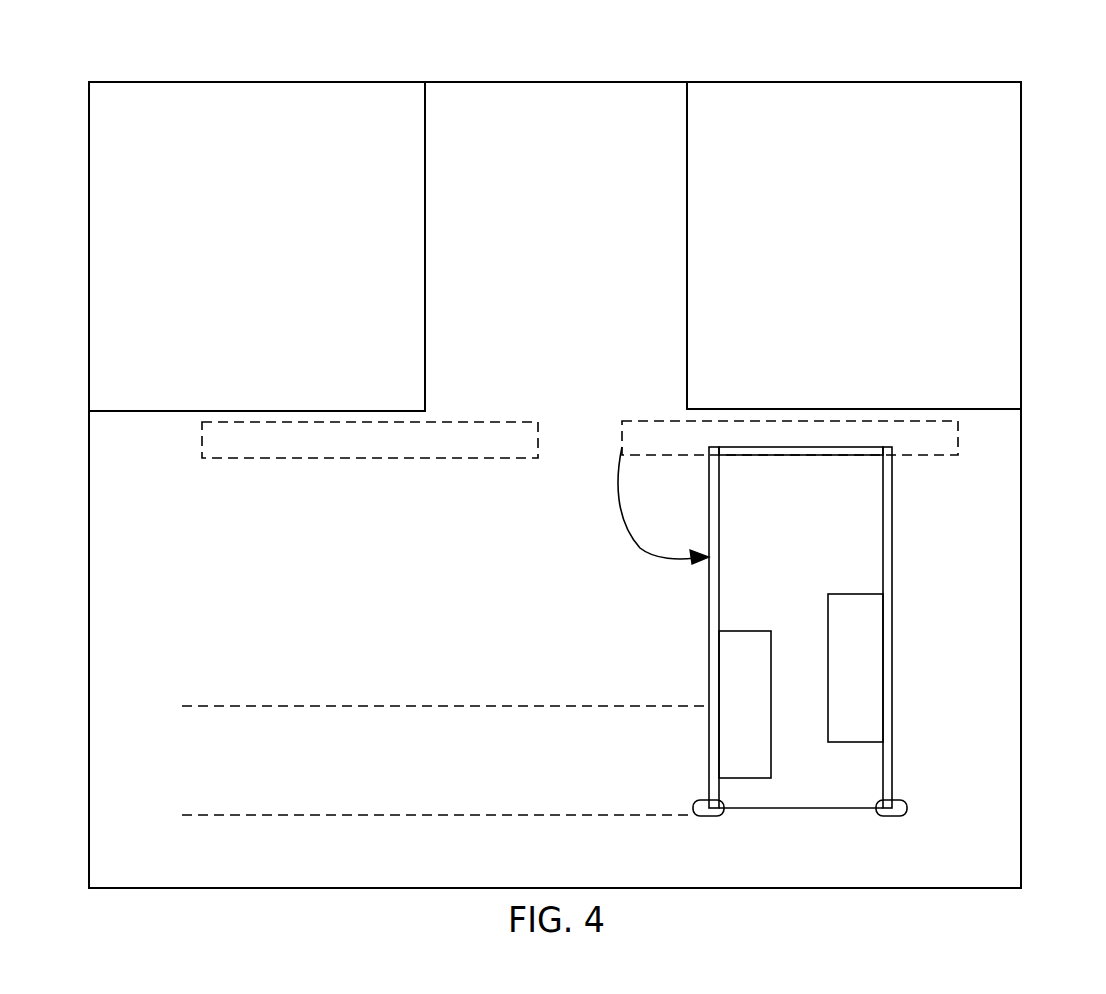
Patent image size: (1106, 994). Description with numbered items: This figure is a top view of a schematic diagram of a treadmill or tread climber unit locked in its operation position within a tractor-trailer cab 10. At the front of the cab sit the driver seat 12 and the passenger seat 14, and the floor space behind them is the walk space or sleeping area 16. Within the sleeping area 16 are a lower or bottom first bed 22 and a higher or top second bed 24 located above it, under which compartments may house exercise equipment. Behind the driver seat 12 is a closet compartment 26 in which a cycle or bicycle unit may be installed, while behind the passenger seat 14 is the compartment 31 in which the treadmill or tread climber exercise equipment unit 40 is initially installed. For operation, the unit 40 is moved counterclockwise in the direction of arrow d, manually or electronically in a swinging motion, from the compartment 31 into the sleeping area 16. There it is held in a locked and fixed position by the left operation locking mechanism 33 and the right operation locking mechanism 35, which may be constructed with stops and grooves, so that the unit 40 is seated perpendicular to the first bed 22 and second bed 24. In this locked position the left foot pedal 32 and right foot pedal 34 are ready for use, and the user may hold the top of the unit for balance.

The device / assembly 10 is at (1012, 58).
The driver seat 12 is at (243, 249).
The passenger seat 14 is at (839, 266).
The sleeping area 16 is at (299, 559).
The first bed 22 is at (219, 706).
The second bed 24 is at (219, 815).
The closet compartment 26 is at (354, 450).
The compartment 31 is at (636, 449).
The left foot pedal 32 is at (729, 717).
The left operation locking mechanism 33 is at (709, 817).
The right foot pedal 34 is at (839, 691).
The right operation locking mechanism 35 is at (893, 817).
The treadmill or tread climber exercise equipment unit 40 is at (914, 489).
The arrow d is at (638, 549).